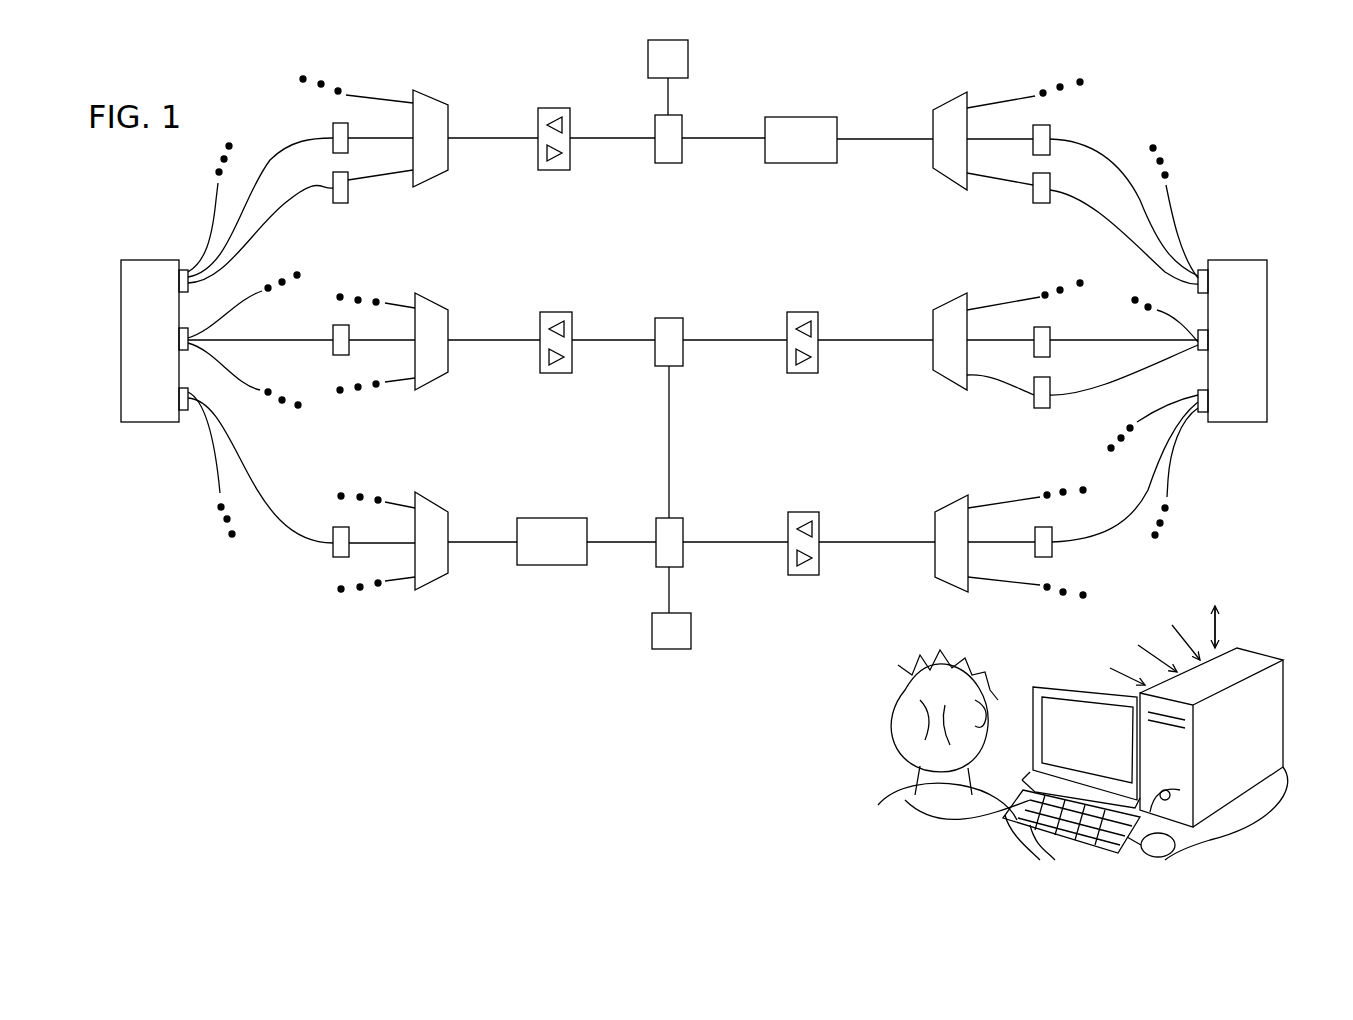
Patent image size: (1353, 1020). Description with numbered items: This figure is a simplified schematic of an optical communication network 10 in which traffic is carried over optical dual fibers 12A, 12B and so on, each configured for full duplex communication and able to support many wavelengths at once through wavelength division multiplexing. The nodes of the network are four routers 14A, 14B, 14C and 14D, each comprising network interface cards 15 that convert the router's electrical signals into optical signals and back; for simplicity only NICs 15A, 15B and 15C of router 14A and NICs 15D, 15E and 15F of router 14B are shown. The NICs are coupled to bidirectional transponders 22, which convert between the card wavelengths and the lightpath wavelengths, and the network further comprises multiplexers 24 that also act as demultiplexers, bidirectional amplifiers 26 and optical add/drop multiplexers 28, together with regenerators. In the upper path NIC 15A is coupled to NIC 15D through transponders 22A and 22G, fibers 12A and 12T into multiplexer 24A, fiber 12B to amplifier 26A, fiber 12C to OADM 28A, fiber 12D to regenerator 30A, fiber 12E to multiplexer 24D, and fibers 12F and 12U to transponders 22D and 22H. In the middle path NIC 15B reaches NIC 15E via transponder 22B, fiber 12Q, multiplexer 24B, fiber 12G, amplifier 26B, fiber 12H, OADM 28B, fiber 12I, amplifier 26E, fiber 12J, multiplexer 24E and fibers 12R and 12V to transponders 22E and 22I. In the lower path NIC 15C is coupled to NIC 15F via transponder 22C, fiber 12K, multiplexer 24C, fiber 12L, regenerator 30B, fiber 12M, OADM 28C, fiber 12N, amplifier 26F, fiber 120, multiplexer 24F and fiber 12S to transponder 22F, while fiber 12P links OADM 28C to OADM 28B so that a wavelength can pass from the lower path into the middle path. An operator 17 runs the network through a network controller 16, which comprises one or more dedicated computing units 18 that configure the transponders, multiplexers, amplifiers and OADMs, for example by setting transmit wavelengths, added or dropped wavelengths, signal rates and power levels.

The optical communication network 10 is at (167, 688).
The optical dual fiber 12A is at (403, 138).
The optical dual fiber 12B is at (520, 138).
The optical dual fiber 12C is at (648, 138).
The optical dual fiber 12D is at (740, 138).
The optical dual fiber 12E is at (910, 139).
The optical dual fiber 12F is at (980, 139).
The optical dual fiber 12G is at (520, 340).
The optical dual fiber 12H is at (648, 340).
The optical dual fiber 12I is at (760, 340).
The optical dual fiber 12J is at (870, 340).
The optical dual fiber 12K is at (400, 543).
The optical dual fiber 12L is at (475, 542).
The optical dual fiber 12M is at (640, 542).
The optical fiber span 12N is at (772, 542).
The optical fiber span 120 is at (908, 542).
The optical dual fiber 12P is at (669, 430).
The optical dual fiber 12Q is at (400, 340).
The optical dual fiber 12R is at (980, 340).
The optical fiber span 12S is at (980, 542).
The optical dual fiber 12T is at (407, 171).
The optical dual fiber 12U is at (975, 172).
The optical dual fiber 12V is at (1000, 378).
The router 14A is at (152, 260).
The router 14B is at (1235, 260).
The router 14C is at (691, 632).
The router 14D is at (688, 58).
The network interface cards 15 is at (130, 478).
The network interface card 15A is at (179, 282).
The network interface card 15B is at (179, 338).
The network interface card 15C is at (179, 400).
The network interface card 15D is at (1208, 282).
The network interface card 15E is at (1208, 340).
The network interface card 15F is at (1208, 400).
The network controller 16 is at (1283, 750).
The operator 17 is at (893, 716).
The dedicated computing units 18 is at (1253, 645).
The bidirectional transponders 22 is at (300, 615).
The transponder 22A is at (333, 125).
The transponder 22B is at (333, 350).
The transponder 22C is at (333, 553).
The transponder 22D is at (1050, 128).
The transponder 22E is at (1050, 332).
The transponder 22F is at (1045, 557).
The transponder 22G is at (341, 205).
The transponder 22H is at (1042, 205).
The transponder 22I is at (1050, 385).
The multiplexers 24 is at (388, 620).
The multiplexer 24A is at (433, 97).
The multiplexer 24B is at (433, 300).
The multiplexer 24C is at (430, 585).
The multiplexer 24D is at (950, 100).
The multiplexer 24E is at (948, 303).
The multiplexer 24F is at (948, 583).
The bidirectional amplifiers 26 is at (590, 100).
The amplifier 26A is at (560, 108).
The amplifier 26B is at (562, 312).
The amplifier 26E is at (808, 312).
The amplifier 26F is at (800, 512).
The optical add/drop multiplexers 28 is at (625, 605).
The optical add/drop multiplexer 28A is at (673, 163).
The optical add/drop multiplexer 28B is at (673, 318).
The optical add/drop multiplexer 28C is at (683, 528).
The regenerator 30A is at (822, 117).
The regenerator 30B is at (572, 518).